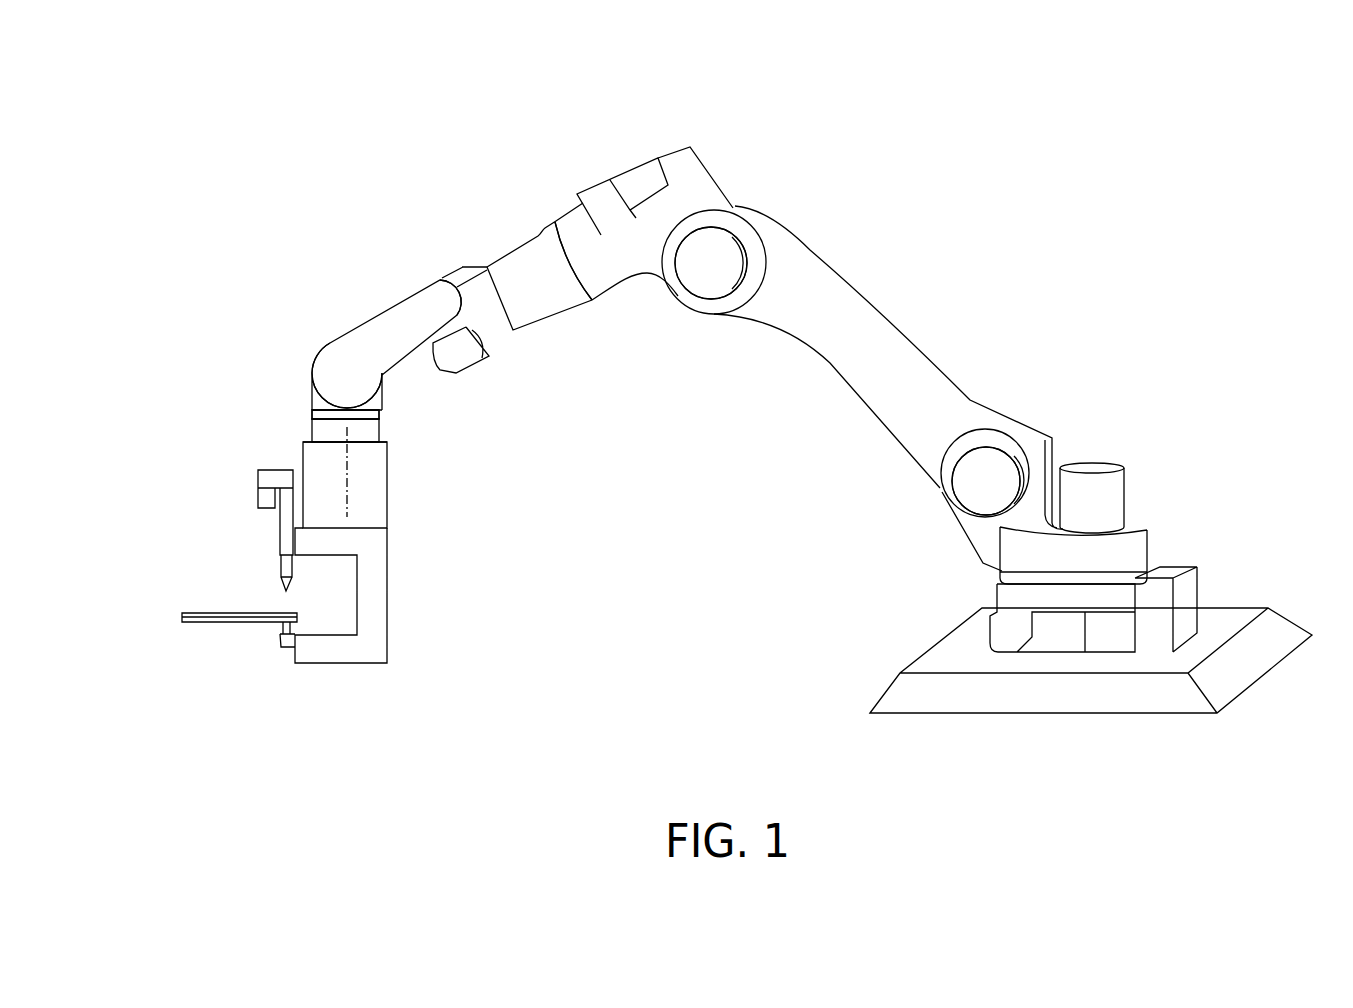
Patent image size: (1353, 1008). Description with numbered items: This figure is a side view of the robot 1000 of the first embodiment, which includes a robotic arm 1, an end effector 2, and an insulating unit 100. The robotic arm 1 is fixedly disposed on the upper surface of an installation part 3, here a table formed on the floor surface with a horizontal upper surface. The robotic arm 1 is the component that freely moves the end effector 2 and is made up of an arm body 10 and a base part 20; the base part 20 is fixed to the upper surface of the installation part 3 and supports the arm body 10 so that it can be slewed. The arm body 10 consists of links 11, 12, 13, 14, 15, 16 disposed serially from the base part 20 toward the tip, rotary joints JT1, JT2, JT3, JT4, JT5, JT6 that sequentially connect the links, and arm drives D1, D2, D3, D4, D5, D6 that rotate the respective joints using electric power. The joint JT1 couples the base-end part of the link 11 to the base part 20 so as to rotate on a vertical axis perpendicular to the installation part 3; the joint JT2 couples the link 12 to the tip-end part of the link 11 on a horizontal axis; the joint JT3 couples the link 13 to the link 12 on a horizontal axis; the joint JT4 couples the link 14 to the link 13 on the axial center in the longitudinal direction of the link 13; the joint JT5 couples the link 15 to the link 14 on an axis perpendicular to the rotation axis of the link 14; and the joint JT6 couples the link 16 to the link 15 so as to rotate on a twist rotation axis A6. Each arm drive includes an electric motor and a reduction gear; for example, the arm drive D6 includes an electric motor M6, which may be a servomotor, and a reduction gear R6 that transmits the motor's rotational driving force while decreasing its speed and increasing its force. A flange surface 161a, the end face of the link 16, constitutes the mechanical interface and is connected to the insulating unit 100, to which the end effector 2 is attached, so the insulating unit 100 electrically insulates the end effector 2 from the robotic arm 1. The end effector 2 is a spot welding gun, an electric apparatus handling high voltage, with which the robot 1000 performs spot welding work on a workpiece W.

The robot 1000 is at (1208, 123).
The arm body 10 is at (913, 201).
The robotic arm 1 is at (1152, 271).
The installation part 3 is at (940, 717).
The base part 20 is at (1003, 628).
The link 11 is at (1147, 527).
The joint JT1 is at (1007, 573).
The arm drive D1 is at (1100, 462).
The link 12 is at (862, 280).
The joint JT2 is at (935, 490).
The arm drive D2 is at (987, 478).
The joint JT3 is at (707, 305).
The arm drive D3 is at (712, 263).
The link 13 is at (680, 152).
The arm drive D4 is at (670, 163).
The joint JT4 is at (583, 300).
The link 14 is at (465, 268).
The arm drive D5 is at (429, 300).
The link 15 is at (316, 350).
The joint JT5 is at (312, 378).
The arm drive D6 is at (322, 356).
The electric motor M6 is at (410, 370).
The joint JT6 is at (312, 417).
The reduction gear R6 is at (380, 416).
The insulating unit 100 is at (312, 433).
The link 16 is at (385, 415).
The flange surface 161a is at (363, 443).
The twist rotation axis A6 is at (347, 503).
The end effector 2 is at (388, 590).
The workpiece W is at (210, 613).